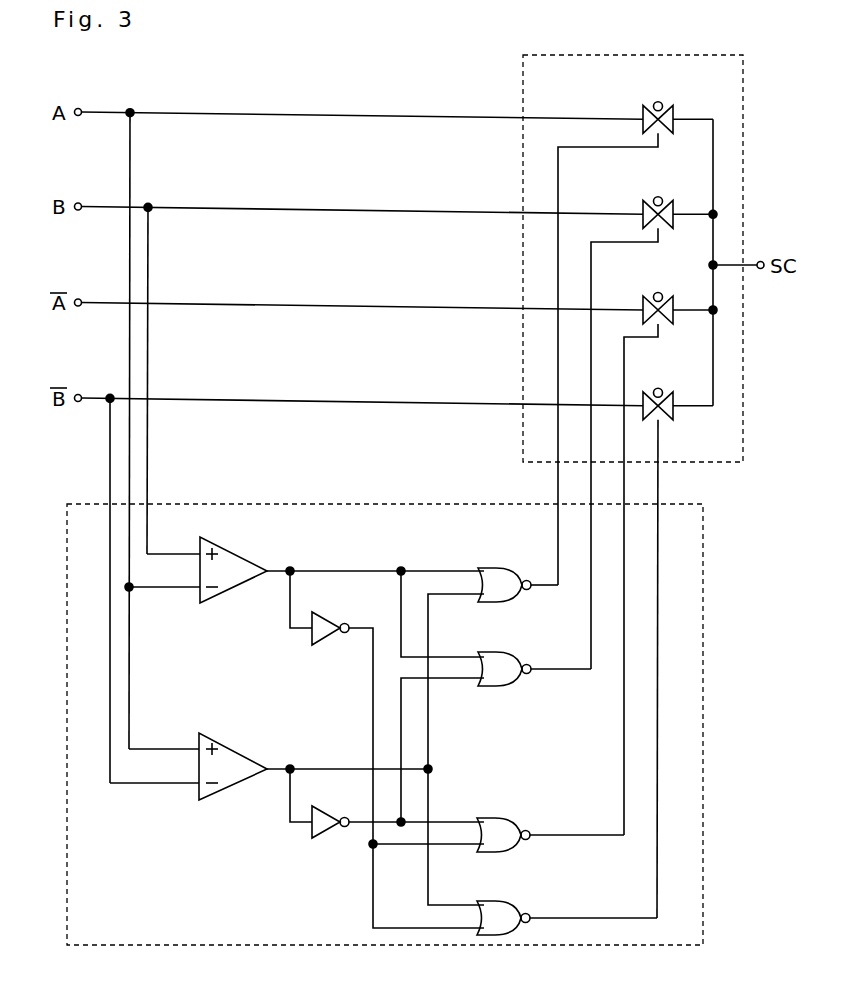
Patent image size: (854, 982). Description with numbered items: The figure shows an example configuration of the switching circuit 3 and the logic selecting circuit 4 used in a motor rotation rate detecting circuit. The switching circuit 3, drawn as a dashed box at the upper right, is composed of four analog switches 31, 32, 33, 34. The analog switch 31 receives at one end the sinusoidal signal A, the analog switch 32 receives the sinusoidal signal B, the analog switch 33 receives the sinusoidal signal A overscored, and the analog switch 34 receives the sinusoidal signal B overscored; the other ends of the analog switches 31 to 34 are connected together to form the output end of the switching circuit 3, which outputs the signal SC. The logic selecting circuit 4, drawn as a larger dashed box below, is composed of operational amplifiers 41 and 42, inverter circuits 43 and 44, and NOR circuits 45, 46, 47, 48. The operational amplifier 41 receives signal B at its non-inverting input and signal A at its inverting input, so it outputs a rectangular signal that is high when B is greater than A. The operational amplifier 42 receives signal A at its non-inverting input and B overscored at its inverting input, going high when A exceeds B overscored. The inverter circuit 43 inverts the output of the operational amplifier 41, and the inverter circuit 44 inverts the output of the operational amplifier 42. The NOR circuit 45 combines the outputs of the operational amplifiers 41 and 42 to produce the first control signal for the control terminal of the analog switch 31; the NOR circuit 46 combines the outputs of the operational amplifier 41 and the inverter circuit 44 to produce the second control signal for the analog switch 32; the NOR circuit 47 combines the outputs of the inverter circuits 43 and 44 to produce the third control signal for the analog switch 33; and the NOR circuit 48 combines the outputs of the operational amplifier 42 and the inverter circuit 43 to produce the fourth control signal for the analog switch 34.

The switching circuit 3 is at (636, 55).
The analog switch 31 is at (659, 102).
The analog switch 32 is at (659, 198).
The analog switch 33 is at (659, 293).
The analog switch 34 is at (659, 389).
The logic selecting circuit 4 is at (382, 505).
The operational amplifier 41 is at (226, 549).
The operational amplifier 42 is at (227, 745).
The inverter circuit 43 is at (324, 646).
The inverter circuit 44 is at (324, 840).
The NOR circuit 45 is at (493, 570).
The NOR circuit 46 is at (493, 652).
The NOR circuit 47 is at (492, 818).
The NOR circuit 48 is at (492, 901).